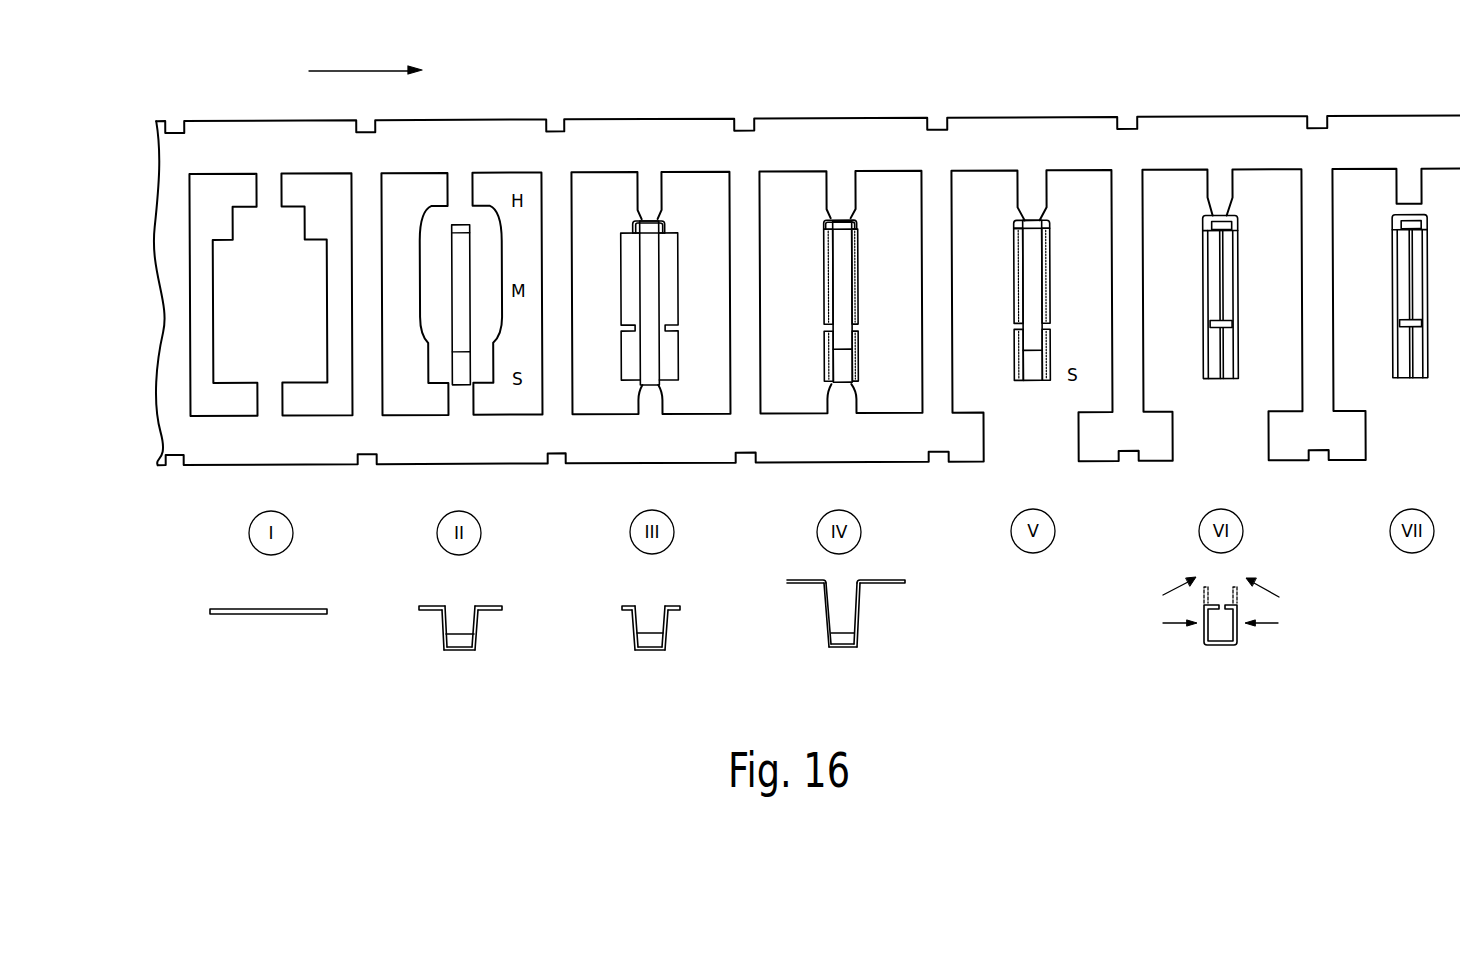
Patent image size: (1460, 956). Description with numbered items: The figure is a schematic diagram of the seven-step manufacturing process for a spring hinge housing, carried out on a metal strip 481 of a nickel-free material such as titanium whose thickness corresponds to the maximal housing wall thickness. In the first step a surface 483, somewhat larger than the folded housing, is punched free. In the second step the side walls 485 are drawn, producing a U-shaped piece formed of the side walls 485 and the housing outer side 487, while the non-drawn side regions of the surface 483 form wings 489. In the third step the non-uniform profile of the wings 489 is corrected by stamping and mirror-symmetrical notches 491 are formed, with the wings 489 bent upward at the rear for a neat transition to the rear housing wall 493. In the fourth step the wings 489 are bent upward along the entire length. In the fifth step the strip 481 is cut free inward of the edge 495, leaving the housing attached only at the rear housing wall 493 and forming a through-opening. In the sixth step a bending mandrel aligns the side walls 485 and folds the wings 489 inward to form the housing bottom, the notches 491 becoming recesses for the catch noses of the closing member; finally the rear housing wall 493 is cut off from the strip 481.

The metal strip 481 is at (232, 147).
The surface 483 is at (226, 373).
The side wall 485 is at (437, 633).
The housing outer side 487 is at (460, 652).
The wings 489 is at (432, 606).
The notches 491 is at (673, 330).
The rear housing wall 493 is at (668, 217).
The edge 495 is at (838, 389).